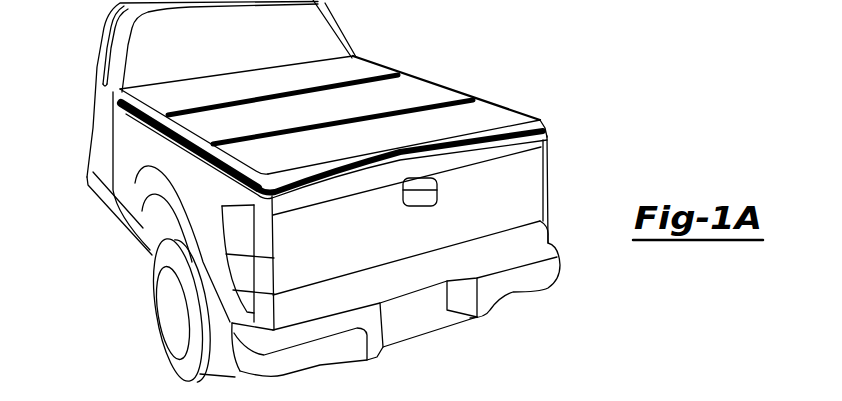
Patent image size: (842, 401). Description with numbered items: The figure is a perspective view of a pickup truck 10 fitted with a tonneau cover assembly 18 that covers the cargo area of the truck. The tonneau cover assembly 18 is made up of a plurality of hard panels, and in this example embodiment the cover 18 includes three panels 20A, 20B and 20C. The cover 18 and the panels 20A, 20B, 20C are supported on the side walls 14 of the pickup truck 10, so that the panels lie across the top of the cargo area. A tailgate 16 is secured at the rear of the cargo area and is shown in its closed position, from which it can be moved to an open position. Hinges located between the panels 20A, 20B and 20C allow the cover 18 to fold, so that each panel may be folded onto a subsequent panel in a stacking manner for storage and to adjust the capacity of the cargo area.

The pickup truck 10 is at (72, 63).
The side walls 14 is at (133, 147).
The tailgate 16 is at (526, 177).
The tonneau cover assembly 18 is at (540, 99).
The panel 20A is at (480, 113).
The panel 20B is at (417, 95).
The panel 20C is at (354, 73).